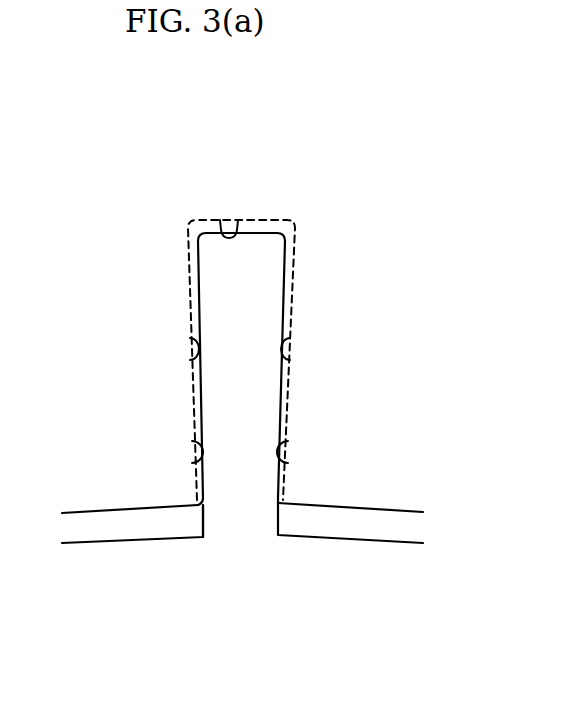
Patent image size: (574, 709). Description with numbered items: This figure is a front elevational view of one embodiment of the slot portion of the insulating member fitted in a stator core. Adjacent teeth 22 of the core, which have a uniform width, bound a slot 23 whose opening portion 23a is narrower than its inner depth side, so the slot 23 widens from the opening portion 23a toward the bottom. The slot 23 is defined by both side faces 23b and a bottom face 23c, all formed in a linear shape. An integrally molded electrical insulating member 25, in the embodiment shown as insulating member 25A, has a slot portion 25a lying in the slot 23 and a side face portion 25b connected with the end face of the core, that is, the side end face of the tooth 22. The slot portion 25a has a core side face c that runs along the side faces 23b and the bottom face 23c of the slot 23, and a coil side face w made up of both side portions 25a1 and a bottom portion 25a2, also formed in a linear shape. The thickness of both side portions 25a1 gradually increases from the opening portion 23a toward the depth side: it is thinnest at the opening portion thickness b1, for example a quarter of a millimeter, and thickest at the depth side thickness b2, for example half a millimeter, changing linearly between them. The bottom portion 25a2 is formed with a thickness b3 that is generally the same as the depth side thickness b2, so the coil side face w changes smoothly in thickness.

The tooth 22 is at (110, 532).
The slot 23 is at (233, 515).
The opening portion 23a is at (213, 528).
The side faces 23b is at (190, 356).
The bottom face 23c is at (242, 221).
The insulating member 25 is at (367, 616).
The insulating member 25A is at (358, 168).
The slot portion 25a is at (278, 497).
The side portions 25a1 is at (200, 463).
The bottom portion 25a2 is at (248, 234).
The side face portion 25b is at (345, 495).
The opening portion thickness b1 is at (175, 492).
The depth side portion thickness b2 is at (225, 248).
The bottom face portion thickness b3 is at (263, 258).
The coil side face w is at (280, 403).
The core side face c is at (290, 410).